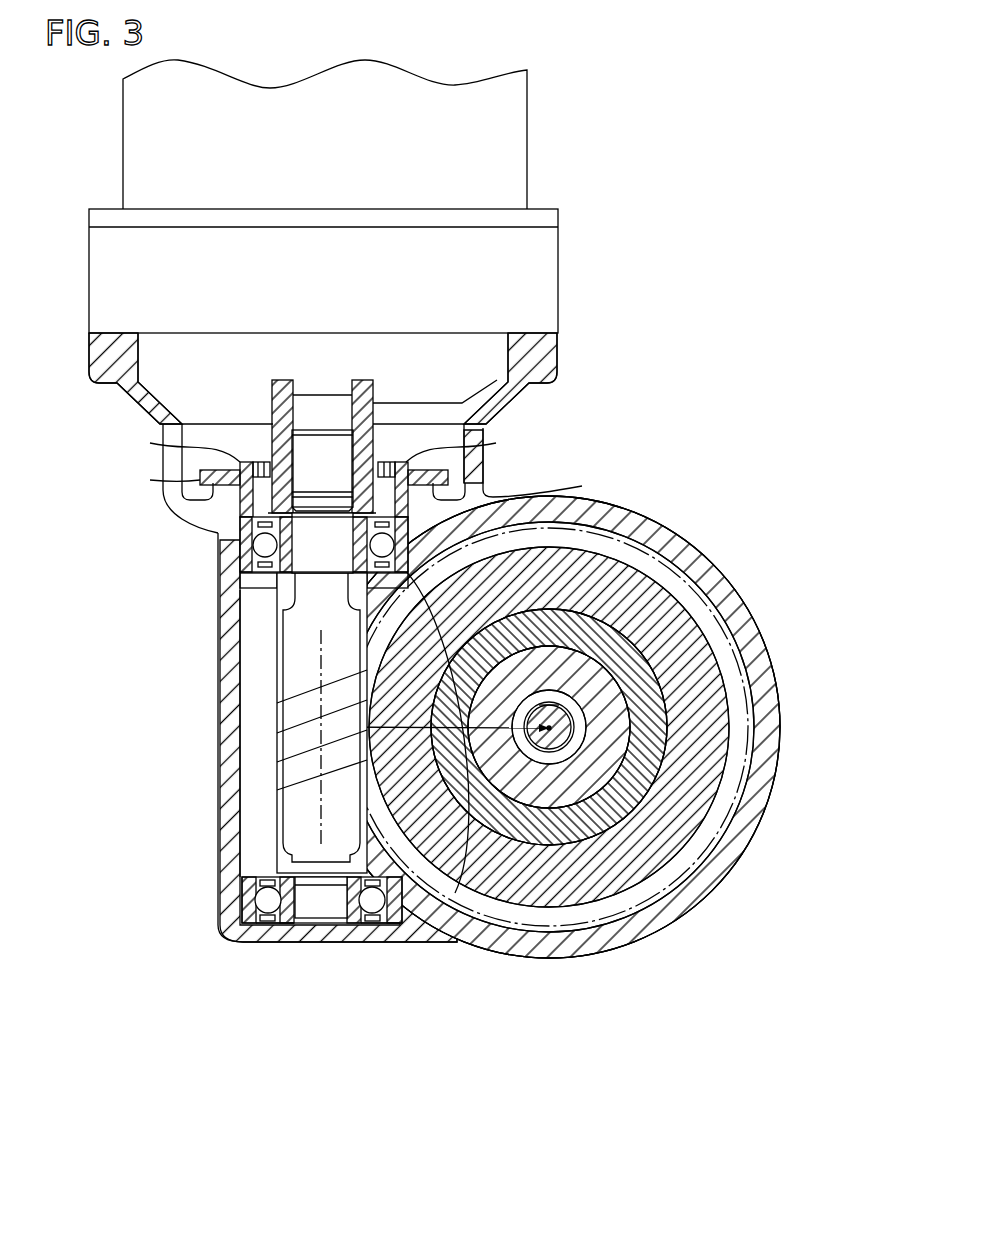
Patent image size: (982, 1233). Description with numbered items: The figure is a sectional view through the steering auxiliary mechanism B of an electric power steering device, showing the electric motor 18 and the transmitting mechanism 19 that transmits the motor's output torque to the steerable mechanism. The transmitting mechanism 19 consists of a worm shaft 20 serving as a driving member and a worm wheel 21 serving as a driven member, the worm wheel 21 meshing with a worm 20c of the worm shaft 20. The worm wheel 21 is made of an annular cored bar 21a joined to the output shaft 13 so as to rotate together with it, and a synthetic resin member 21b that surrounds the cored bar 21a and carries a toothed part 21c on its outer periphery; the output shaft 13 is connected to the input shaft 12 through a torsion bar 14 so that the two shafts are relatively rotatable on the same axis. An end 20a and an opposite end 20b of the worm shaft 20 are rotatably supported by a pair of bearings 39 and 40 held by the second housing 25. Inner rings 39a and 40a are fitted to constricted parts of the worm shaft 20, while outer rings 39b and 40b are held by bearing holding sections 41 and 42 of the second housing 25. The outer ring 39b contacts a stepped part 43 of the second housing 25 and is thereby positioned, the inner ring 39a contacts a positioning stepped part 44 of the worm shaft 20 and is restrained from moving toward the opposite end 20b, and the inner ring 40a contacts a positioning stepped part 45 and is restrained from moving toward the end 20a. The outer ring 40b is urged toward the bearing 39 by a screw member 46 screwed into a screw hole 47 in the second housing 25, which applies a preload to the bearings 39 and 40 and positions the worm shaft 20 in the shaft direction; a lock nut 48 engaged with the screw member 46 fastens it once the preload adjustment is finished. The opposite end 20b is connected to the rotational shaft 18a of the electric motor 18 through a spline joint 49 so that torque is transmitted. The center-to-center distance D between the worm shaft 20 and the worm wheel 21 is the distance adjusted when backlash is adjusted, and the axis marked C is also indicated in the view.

The electric motor 18 is at (122, 143).
The rotational shaft 18a is at (335, 417).
The transmitting mechanism 19 is at (240, 737).
The worm shaft 20 is at (255, 766).
The end 20a is at (323, 923).
The opposite end 20b is at (320, 448).
The worm 20c is at (276, 770).
The worm wheel 21 is at (578, 762).
The annular cored bar 21a is at (559, 828).
The synthetic resin member 21b is at (603, 887).
The toothed part 21c is at (683, 910).
The second housing 25 is at (735, 597).
The bearing holding section 42 is at (530, 501).
The input shaft 12 is at (578, 741).
The output shaft 13 is at (598, 786).
The torsion bar 14 is at (549, 728).
The bearing 39 is at (281, 942).
The inner ring 39a is at (360, 920).
The outer ring 39b is at (247, 893).
The bearing 40 is at (254, 578).
The inner ring 40a is at (280, 588).
The outer ring 40b is at (247, 537).
The bearing holding section 41 is at (397, 900).
The stepped part 43 is at (263, 923).
The positioning stepped part 44 is at (327, 910).
The positioning stepped part 45 is at (343, 562).
The screw member 46 is at (243, 447).
The screw hole 47 is at (383, 490).
The lock nut 48 is at (210, 480).
The spline joint 49 is at (358, 452).
The steering auxiliary mechanism B is at (688, 527).
The swivel axis C is at (262, 733).
The center-to-center distance D is at (455, 893).